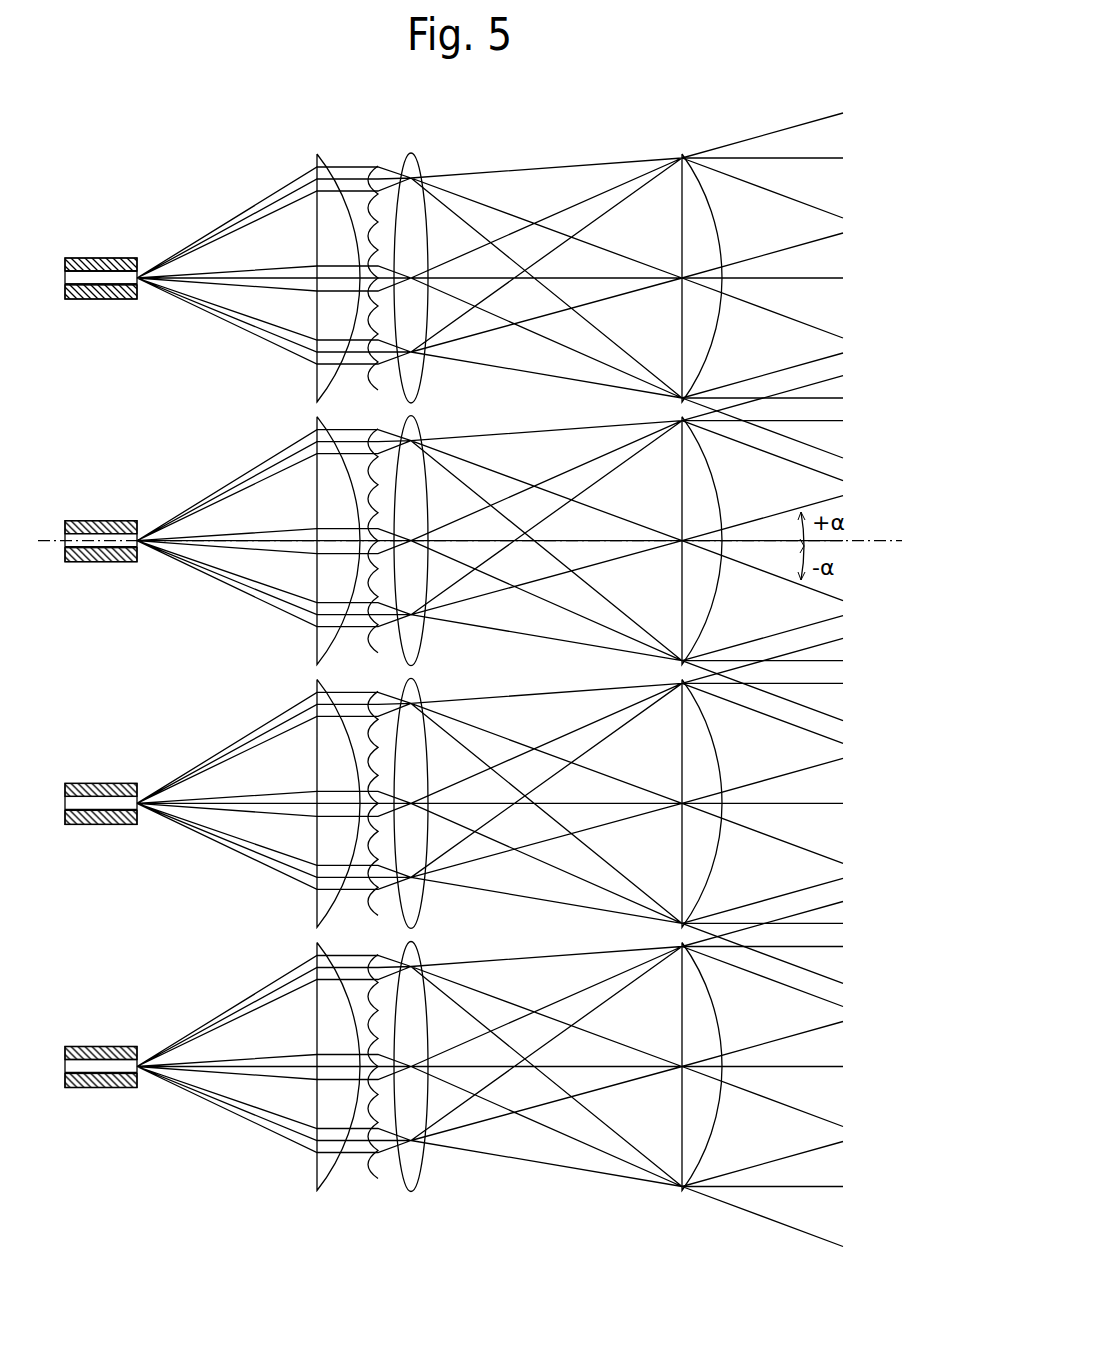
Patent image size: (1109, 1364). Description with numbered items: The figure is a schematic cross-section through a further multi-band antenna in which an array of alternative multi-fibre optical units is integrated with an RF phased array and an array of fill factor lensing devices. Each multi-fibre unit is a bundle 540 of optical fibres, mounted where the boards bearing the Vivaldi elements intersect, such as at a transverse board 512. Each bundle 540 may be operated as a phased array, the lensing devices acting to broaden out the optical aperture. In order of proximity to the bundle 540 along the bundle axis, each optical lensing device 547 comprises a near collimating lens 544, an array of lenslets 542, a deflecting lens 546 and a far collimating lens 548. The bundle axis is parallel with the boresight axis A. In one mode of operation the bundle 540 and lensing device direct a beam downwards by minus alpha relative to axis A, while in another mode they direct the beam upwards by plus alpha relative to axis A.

The bundle of optical fibres 540 is at (102, 276).
The transverse board 512 is at (104, 290).
The near collimating lens 544 is at (332, 157).
The array of lenslets 542 is at (374, 168).
The deflecting lens 546 is at (412, 220).
The far collimating lens 548 is at (705, 220).
The optical lensing device 547 is at (727, 1213).
The boresight axis A is at (867, 545).